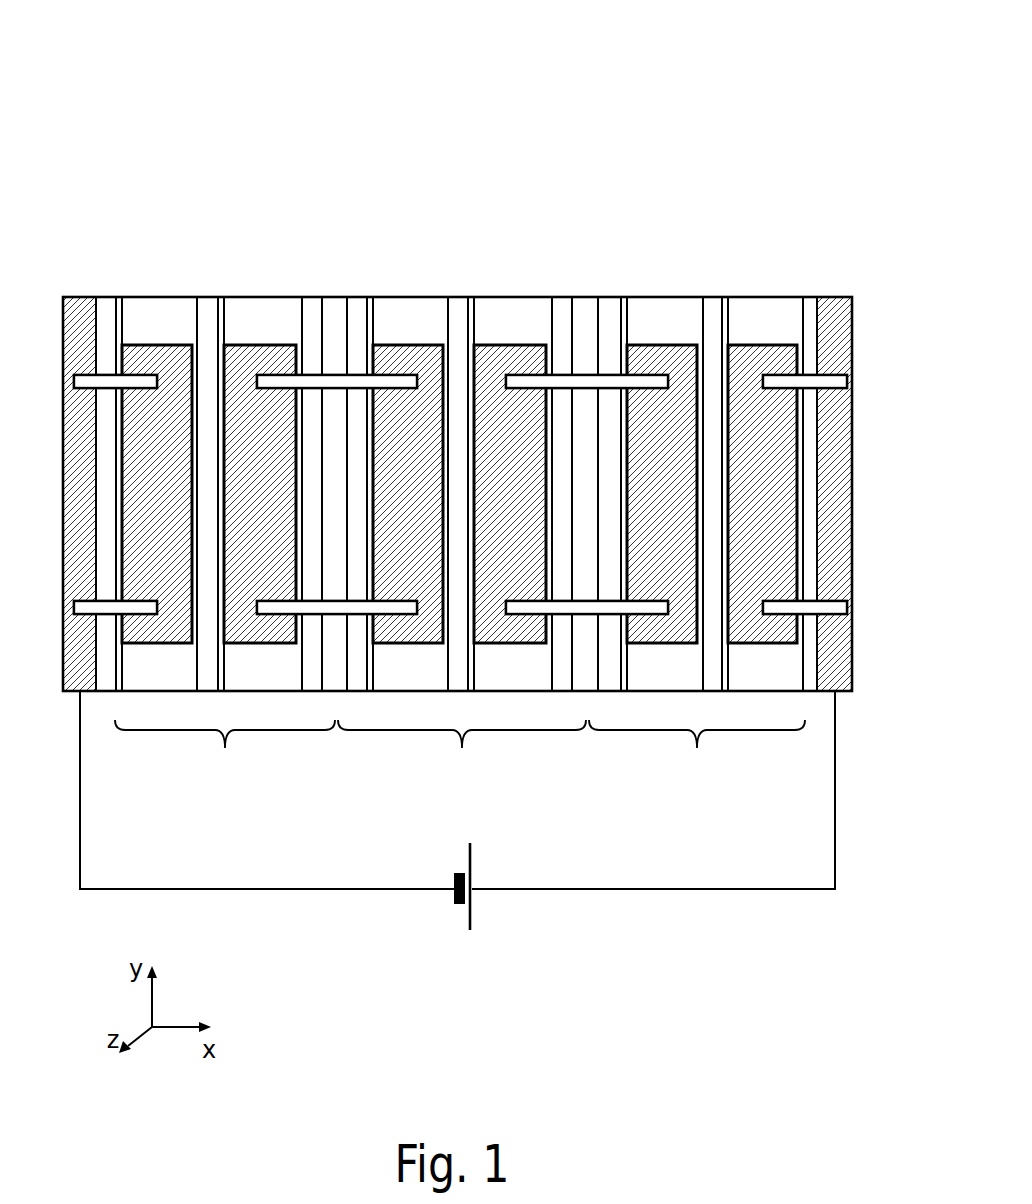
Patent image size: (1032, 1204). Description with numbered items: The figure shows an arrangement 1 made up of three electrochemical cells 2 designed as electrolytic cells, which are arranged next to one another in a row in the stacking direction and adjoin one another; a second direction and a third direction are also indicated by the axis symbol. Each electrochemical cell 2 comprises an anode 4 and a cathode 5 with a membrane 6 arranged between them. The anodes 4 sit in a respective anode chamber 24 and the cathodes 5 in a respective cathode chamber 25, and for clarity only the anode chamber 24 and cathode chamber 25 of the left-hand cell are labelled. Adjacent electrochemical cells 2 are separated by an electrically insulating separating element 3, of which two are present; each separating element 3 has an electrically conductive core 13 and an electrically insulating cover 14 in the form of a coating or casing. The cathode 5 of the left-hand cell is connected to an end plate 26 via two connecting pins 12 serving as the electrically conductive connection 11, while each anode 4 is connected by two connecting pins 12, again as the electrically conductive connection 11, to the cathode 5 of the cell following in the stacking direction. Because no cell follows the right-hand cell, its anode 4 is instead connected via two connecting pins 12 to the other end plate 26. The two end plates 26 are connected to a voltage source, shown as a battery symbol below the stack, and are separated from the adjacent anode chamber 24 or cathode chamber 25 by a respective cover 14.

The arrangement 1 is at (826, 122).
The electrochemical cell 2 is at (460, 753).
The separating element 3 is at (314, 317).
The anode 4 is at (262, 345).
The cathode 5 is at (135, 345).
The membrane 6 is at (208, 317).
The electrically conductive connection 11 is at (82, 372).
The connecting pin 12 is at (491, 379).
The electrically conductive core 13 is at (333, 325).
The electrically insulating cover 14 is at (108, 317).
The anode chamber 24 is at (177, 317).
The cathode chamber 25 is at (242, 317).
The end plate 26 is at (73, 693).